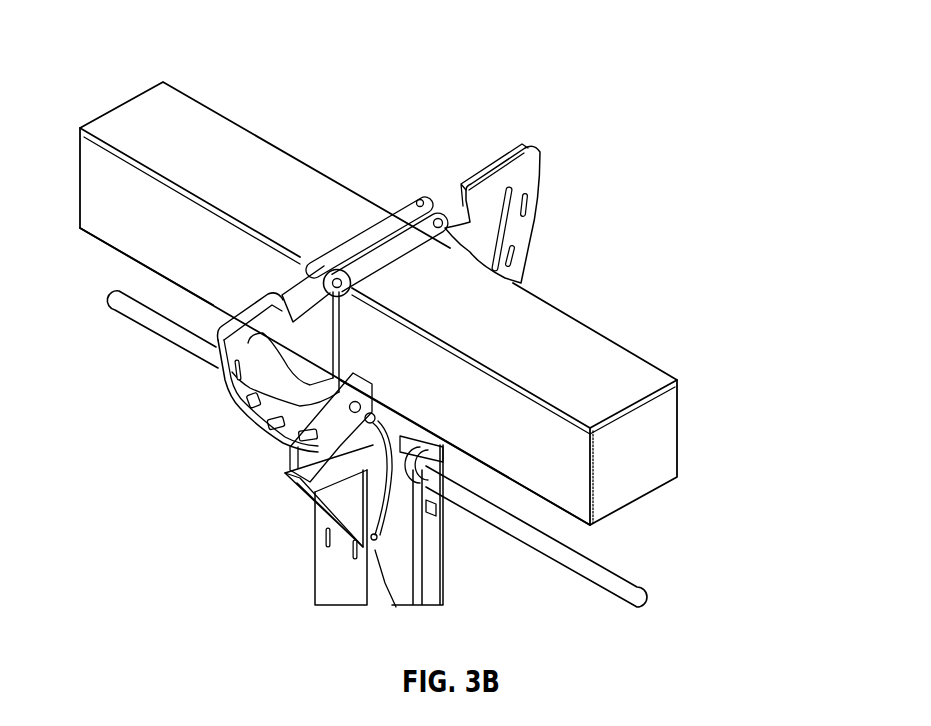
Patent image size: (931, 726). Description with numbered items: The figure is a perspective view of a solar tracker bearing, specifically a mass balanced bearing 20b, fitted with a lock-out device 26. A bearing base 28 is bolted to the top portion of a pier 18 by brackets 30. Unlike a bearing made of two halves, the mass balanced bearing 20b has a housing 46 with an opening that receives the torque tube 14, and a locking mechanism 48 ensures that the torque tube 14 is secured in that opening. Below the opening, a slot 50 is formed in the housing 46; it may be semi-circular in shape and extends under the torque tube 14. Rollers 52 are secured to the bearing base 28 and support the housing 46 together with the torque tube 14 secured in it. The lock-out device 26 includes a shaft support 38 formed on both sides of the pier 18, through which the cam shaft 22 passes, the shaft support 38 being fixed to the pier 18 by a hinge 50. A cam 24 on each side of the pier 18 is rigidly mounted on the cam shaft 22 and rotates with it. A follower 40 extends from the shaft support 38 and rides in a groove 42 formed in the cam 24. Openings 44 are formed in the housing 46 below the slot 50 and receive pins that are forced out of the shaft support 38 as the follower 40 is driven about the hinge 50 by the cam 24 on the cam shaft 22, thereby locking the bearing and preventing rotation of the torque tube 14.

The torque tube 14 is at (218, 112).
The pier 18 is at (315, 583).
The mass balanced bearing 20b is at (379, 264).
The cam shaft 22 is at (603, 593).
The cam 24 is at (385, 583).
The lock-out device 26 is at (328, 453).
The bearing base 28 is at (310, 463).
The bracket 30 is at (317, 495).
The shaft support 38 is at (317, 508).
The follower 40 is at (402, 447).
The groove 42 is at (432, 450).
The opening 44 is at (237, 407).
The housing 46 is at (542, 168).
The locking mechanism 48 is at (412, 212).
The slot 50 is at (273, 362).
The roller 52 is at (338, 397).